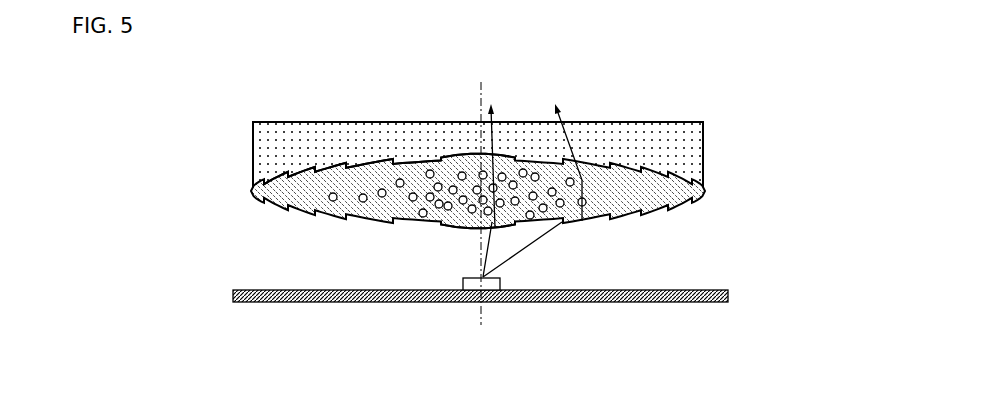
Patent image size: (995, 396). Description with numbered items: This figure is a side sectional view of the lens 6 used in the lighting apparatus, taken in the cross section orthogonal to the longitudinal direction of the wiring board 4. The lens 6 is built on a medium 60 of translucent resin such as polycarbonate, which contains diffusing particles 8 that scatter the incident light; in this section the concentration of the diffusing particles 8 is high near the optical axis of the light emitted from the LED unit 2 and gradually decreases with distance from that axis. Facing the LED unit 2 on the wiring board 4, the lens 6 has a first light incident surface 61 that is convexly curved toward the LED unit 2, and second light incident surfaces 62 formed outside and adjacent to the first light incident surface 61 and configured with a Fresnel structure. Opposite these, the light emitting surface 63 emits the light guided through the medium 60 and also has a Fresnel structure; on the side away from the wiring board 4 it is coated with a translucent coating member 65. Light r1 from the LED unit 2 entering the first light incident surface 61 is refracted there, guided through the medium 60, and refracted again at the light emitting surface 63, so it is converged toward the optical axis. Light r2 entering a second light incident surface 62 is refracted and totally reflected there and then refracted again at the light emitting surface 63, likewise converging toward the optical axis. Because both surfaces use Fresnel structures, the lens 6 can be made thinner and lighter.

The lens 6 is at (178, 72).
The diffusing particles 8 is at (462, 171).
The light emitting surface 63 is at (462, 154).
The translucent coating member 65 is at (654, 128).
The medium 60 is at (690, 201).
The second light incident surfaces 62 is at (441, 235).
The first light incident surface 61 is at (460, 227).
The LED unit 2 is at (490, 282).
The wiring board 4 is at (554, 292).
The light r1 is at (496, 157).
The light r2 is at (564, 153).